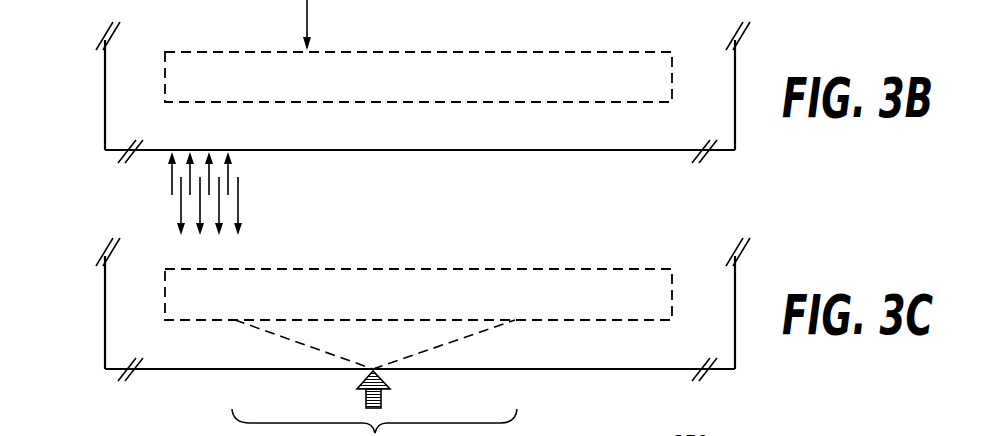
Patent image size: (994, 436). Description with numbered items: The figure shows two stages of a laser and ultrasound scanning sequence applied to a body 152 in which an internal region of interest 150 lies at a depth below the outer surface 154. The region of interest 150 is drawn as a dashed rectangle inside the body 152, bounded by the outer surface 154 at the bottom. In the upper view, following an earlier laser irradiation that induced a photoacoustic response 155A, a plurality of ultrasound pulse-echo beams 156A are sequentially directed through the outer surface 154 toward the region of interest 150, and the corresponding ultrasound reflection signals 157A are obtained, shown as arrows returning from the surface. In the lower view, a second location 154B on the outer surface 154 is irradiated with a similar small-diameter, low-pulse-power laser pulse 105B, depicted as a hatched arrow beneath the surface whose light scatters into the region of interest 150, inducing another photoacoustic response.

In FIG. 3B, the internal region of interest 150 is at (675, 50).
In FIG. 3C, the internal region of interest 150 is at (675, 268).
In FIG. 3B, the body 152 is at (73, 96).
In FIG. 3C, the body 152 is at (73, 312).
In FIG. 3B, the outer surface 154 is at (562, 151).
In FIG. 3C, the outer surface 154 is at (562, 370).
In FIG. 3C, the second location 154B is at (372, 367).
In FIG. 3B, the photoacoustic response 155A is at (308, 20).
In FIG. 3B, the ultrasound pulse-echo beams 156A is at (160, 184).
In FIG. 3B, the ultrasound reflection signals 157A is at (254, 208).
In FIG. 3C, the laser pulse 105B is at (388, 381).